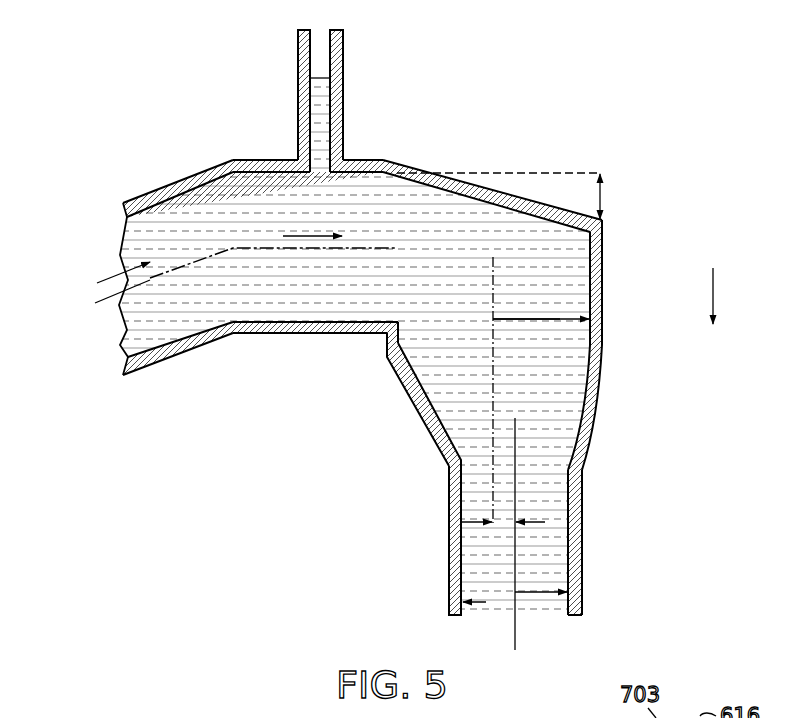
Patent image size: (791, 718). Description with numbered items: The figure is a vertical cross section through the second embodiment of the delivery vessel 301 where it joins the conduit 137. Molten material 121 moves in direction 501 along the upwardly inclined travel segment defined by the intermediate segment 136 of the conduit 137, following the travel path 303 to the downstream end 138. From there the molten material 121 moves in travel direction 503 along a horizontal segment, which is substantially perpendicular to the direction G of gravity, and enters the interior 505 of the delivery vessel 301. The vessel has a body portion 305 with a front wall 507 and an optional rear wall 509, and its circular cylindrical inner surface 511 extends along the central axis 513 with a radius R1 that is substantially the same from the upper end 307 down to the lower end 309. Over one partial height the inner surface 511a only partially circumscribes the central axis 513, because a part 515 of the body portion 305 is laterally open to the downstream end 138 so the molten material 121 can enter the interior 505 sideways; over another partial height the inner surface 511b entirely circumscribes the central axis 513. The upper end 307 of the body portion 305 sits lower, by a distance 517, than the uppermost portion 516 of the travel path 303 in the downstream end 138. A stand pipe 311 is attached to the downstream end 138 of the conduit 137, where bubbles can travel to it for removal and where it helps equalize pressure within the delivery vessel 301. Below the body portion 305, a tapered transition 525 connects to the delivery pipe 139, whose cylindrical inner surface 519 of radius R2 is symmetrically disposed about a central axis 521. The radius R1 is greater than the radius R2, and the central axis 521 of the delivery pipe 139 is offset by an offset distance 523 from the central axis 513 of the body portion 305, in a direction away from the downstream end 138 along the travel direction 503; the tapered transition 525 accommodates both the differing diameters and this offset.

The delivery vessel 301 is at (558, 152).
The travel path 303 is at (97, 308).
The body portion 305 is at (605, 263).
The upper end 307 is at (605, 221).
The lower end 309 is at (386, 358).
The stand pipe 311 is at (298, 60).
The molten material 121 is at (178, 208).
The intermediate segment 136 is at (133, 200).
The conduit 137 is at (160, 380).
The downstream end 138 is at (262, 336).
The delivery pipe 139 is at (583, 549).
The direction 501 is at (107, 273).
The travel direction 503 is at (302, 236).
The interior 505 is at (573, 302).
The front wall 507 is at (605, 332).
The rear wall 509 is at (386, 345).
The circular cylindrical inner surface 511 is at (584, 270).
The circular cylindrical inner surface 511a is at (583, 255).
The circular cylindrical inner surface 511b is at (404, 338).
The central axis 513 is at (493, 272).
The part 515 is at (397, 295).
The uppermost portion 516 is at (364, 180).
The distance 517 is at (604, 197).
The inner surface 519 is at (480, 602).
The central axis 521 is at (515, 508).
The offset distance 523 is at (503, 524).
The tapered transition 525 is at (590, 428).
The radius R1 is at (507, 319).
The radius R2 is at (537, 591).
The direction of gravity G is at (713, 290).